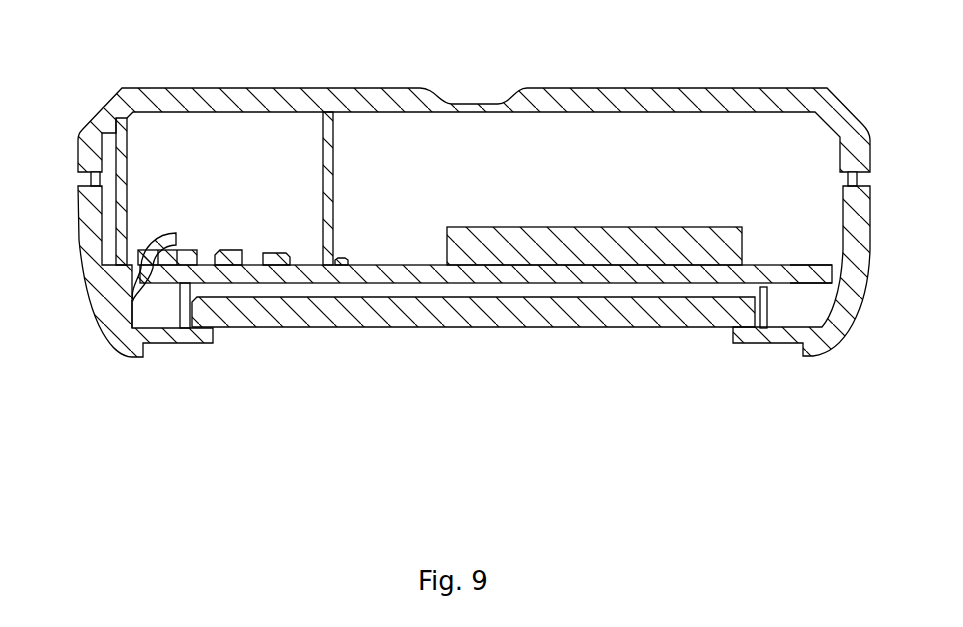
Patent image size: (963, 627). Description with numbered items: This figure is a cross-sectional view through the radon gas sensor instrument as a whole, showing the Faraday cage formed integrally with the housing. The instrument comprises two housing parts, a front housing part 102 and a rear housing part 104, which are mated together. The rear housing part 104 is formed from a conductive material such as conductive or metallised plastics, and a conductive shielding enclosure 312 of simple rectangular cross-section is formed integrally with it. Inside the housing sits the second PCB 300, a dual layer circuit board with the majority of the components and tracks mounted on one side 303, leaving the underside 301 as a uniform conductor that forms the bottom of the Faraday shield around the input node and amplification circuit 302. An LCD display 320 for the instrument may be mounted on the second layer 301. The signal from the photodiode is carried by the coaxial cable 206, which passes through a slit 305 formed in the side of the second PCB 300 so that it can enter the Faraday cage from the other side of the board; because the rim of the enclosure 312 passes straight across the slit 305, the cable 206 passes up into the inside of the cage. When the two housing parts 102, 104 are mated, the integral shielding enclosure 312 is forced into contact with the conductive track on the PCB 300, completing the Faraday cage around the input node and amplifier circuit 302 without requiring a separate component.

The front housing part 102 is at (827, 343).
The rear housing part 104 is at (608, 95).
The coaxial cable 206 is at (138, 248).
The second PCB 300 is at (372, 275).
The underside 301 is at (815, 287).
The input node and amplification circuit 302 is at (297, 223).
The first side 303 is at (823, 263).
The slit 305 is at (132, 330).
The shielding enclosure 312 is at (125, 152).
The LCD display 320 is at (465, 318).